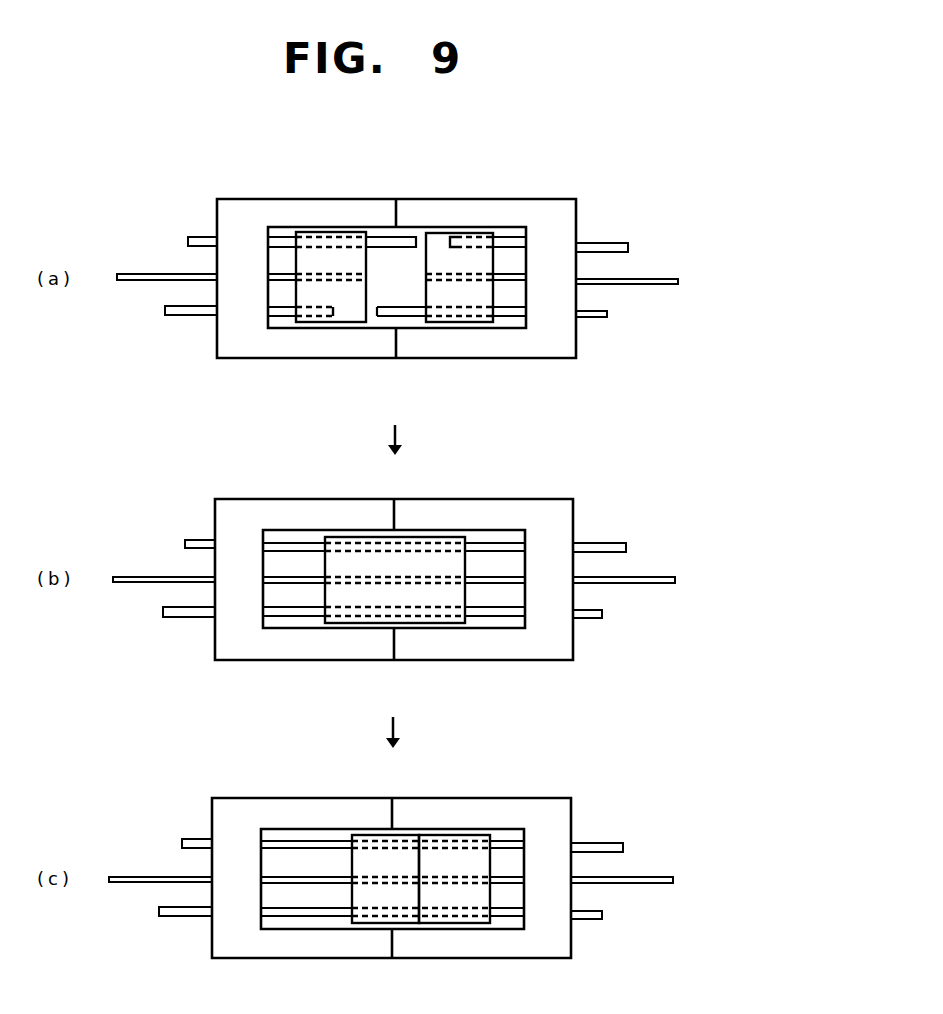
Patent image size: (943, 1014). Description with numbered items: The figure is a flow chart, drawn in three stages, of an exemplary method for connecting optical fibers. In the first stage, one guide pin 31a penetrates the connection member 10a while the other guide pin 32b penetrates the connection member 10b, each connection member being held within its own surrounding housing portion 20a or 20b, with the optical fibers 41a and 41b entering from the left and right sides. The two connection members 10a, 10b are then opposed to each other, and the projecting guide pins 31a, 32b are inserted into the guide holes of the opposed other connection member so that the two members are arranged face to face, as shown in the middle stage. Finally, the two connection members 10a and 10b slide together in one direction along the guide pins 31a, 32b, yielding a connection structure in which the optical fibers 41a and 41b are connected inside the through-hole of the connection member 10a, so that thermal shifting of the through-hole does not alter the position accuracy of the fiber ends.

The first case (housing) half 20a is at (247, 208).
The second case (housing) half 20b is at (543, 213).
The connection member 10a is at (335, 262).
The connection member 10b is at (462, 263).
The guide pin 31a is at (403, 243).
The guide pin 32b is at (410, 317).
The optical fiber 41a is at (147, 272).
The optical fiber 41b is at (637, 277).